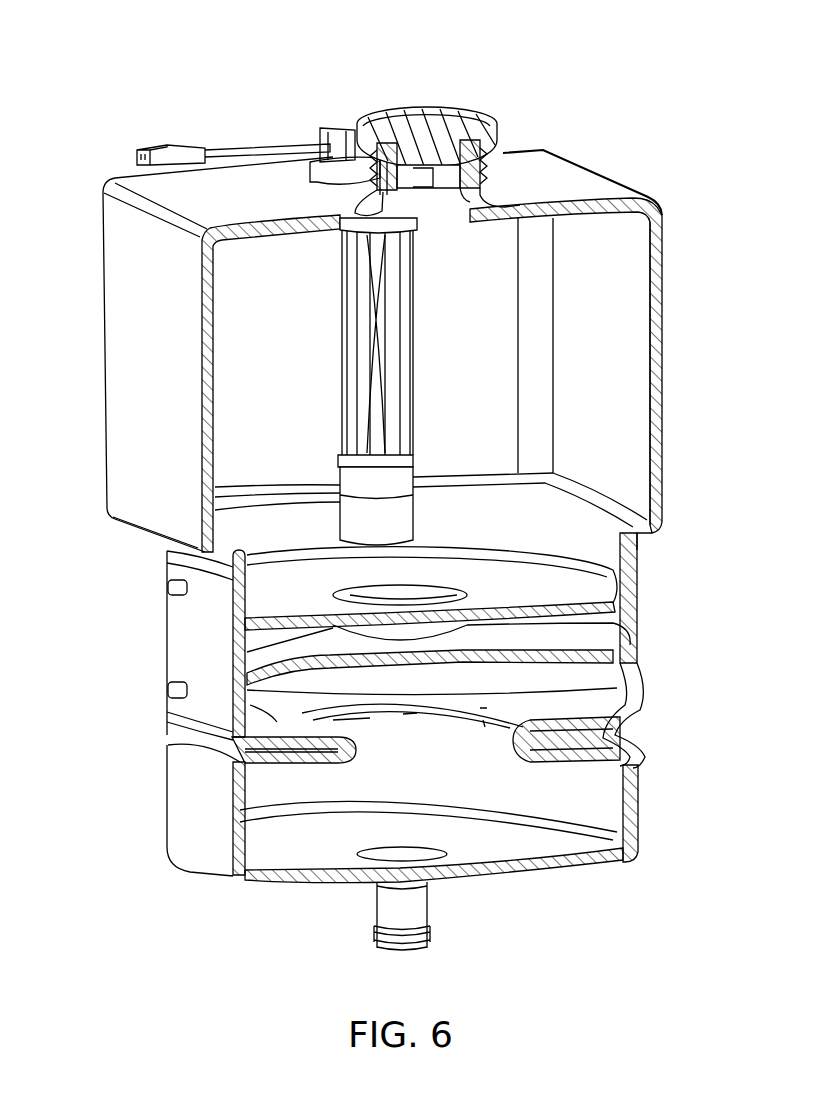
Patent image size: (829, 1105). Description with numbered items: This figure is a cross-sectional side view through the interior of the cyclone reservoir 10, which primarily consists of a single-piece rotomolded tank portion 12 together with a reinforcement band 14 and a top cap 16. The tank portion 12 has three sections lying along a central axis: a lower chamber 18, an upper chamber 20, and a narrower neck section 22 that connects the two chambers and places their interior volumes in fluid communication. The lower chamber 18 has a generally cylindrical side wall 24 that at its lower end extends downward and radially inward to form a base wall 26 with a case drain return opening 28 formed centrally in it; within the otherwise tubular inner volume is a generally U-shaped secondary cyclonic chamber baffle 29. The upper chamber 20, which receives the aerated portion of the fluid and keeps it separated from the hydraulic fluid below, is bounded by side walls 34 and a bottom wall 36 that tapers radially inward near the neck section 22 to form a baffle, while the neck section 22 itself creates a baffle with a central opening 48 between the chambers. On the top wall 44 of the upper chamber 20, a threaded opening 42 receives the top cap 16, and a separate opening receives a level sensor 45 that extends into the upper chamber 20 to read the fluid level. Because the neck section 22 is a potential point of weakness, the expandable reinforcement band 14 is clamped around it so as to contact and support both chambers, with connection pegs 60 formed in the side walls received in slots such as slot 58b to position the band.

The cyclone reservoir 10 is at (658, 118).
The tank portion 12 is at (387, 351).
The reinforcement band 14 is at (174, 645).
The top cap 16 is at (444, 140).
The lower chamber 18 is at (240, 730).
The upper chamber 20 is at (127, 380).
The neck section 22 is at (420, 630).
The side wall 24 is at (640, 712).
The base wall 26 is at (314, 859).
The case drain return opening 28 is at (393, 907).
The secondary cyclonic chamber baffle 29 is at (277, 722).
The side walls 34 is at (653, 340).
The bottom wall 36 is at (431, 575).
The threaded opening 42 is at (470, 158).
The top wall 44 is at (548, 191).
The level sensor 45 is at (410, 348).
The central opening 48 is at (415, 595).
The slot 58b is at (177, 595).
The connection pegs 60 is at (173, 587).